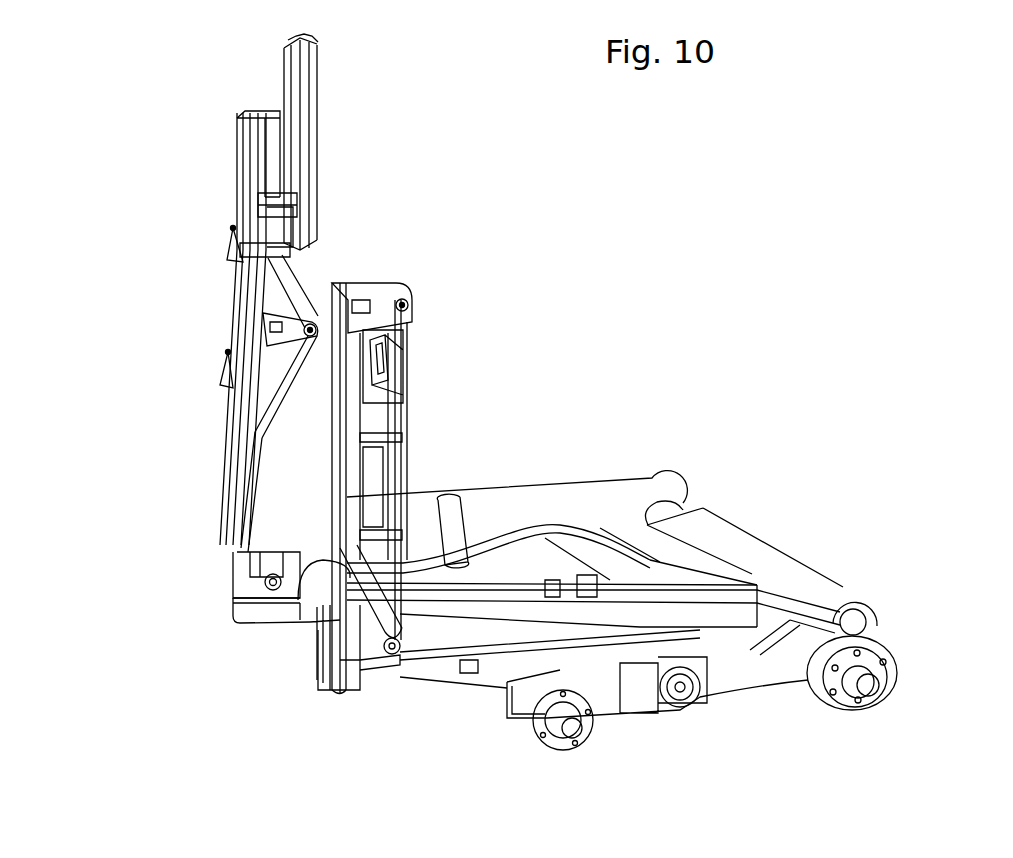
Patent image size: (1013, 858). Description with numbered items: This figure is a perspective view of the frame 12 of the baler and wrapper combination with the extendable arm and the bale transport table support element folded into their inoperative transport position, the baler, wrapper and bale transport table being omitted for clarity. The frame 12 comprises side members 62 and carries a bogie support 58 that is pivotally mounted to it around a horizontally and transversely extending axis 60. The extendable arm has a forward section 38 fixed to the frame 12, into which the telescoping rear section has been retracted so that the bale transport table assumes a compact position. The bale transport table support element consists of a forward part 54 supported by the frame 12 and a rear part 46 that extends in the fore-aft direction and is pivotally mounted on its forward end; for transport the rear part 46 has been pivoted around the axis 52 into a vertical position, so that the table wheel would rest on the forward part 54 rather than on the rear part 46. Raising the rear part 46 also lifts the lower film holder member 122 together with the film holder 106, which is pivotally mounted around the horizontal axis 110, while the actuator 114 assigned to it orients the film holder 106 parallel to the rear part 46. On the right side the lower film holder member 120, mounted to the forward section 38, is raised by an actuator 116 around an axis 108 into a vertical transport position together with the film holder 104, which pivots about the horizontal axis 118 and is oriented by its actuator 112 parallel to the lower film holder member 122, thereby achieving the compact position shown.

The frame 12 is at (650, 700).
The forward section 38 is at (492, 625).
The rear part of the bale transport table support element 46 is at (233, 310).
The axis 52 is at (255, 617).
The forward part of the bale transport table support element 54 is at (267, 618).
The bogie support 58 is at (775, 673).
The axis 60 is at (723, 700).
The side members 62 is at (625, 700).
The film holder 104 is at (403, 437).
The film holder 106 is at (305, 175).
The axis 108 is at (393, 663).
The horizontal axis 110 is at (315, 337).
The actuator 112 is at (372, 358).
The actuator 114 is at (240, 275).
The actuator 116 is at (240, 565).
The horizontal axis 118 is at (408, 303).
The lower film holder member 120 is at (352, 421).
The lower film holder member 122 is at (222, 363).